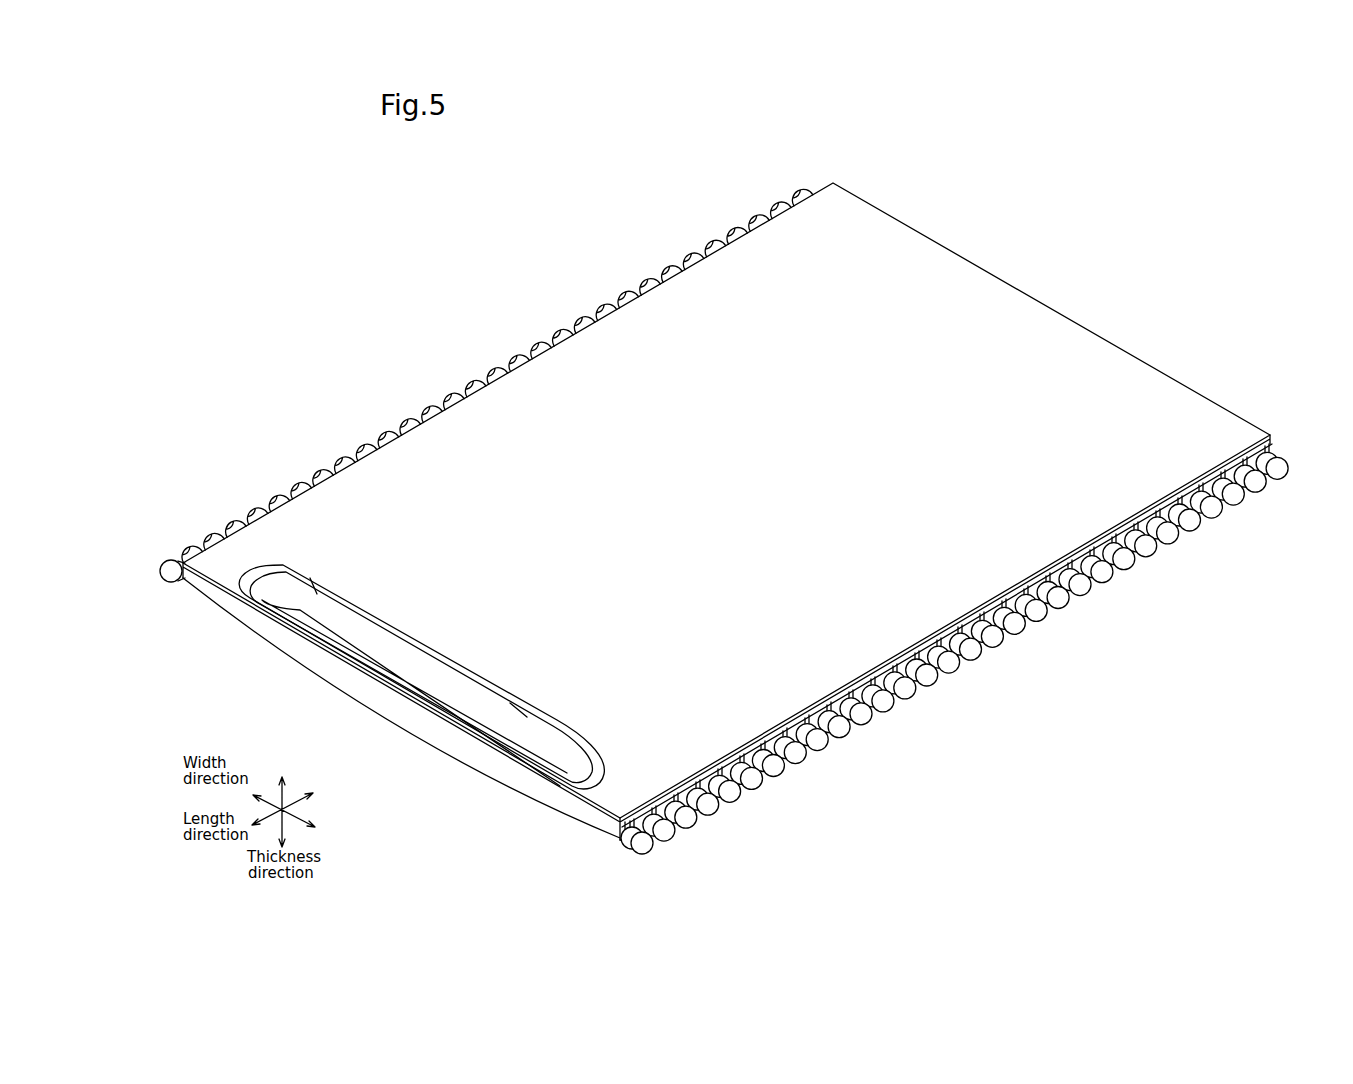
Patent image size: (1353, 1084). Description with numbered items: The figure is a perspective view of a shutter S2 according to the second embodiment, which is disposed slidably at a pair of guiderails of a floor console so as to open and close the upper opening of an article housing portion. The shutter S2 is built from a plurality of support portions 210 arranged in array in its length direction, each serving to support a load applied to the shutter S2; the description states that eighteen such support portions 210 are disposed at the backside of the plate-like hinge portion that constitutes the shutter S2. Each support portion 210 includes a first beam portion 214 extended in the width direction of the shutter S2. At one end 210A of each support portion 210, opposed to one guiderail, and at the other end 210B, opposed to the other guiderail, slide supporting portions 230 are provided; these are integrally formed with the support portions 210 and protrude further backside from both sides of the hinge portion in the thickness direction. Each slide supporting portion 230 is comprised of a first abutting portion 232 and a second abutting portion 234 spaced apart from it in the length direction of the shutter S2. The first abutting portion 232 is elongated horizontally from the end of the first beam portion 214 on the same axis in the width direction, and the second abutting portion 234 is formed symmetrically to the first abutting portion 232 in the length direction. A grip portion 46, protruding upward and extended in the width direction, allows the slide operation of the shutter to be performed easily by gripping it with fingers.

The shutter S2 is at (1066, 291).
The support portion 210 is at (441, 403).
The one end 210A is at (630, 847).
The another end 210B is at (181, 585).
The first beam portion 214 is at (440, 733).
The grip portion 46 is at (483, 683).
The slide supporting portion 230 is at (264, 388).
The first abutting portion 232 is at (216, 535).
The second abutting portion 234 is at (239, 527).